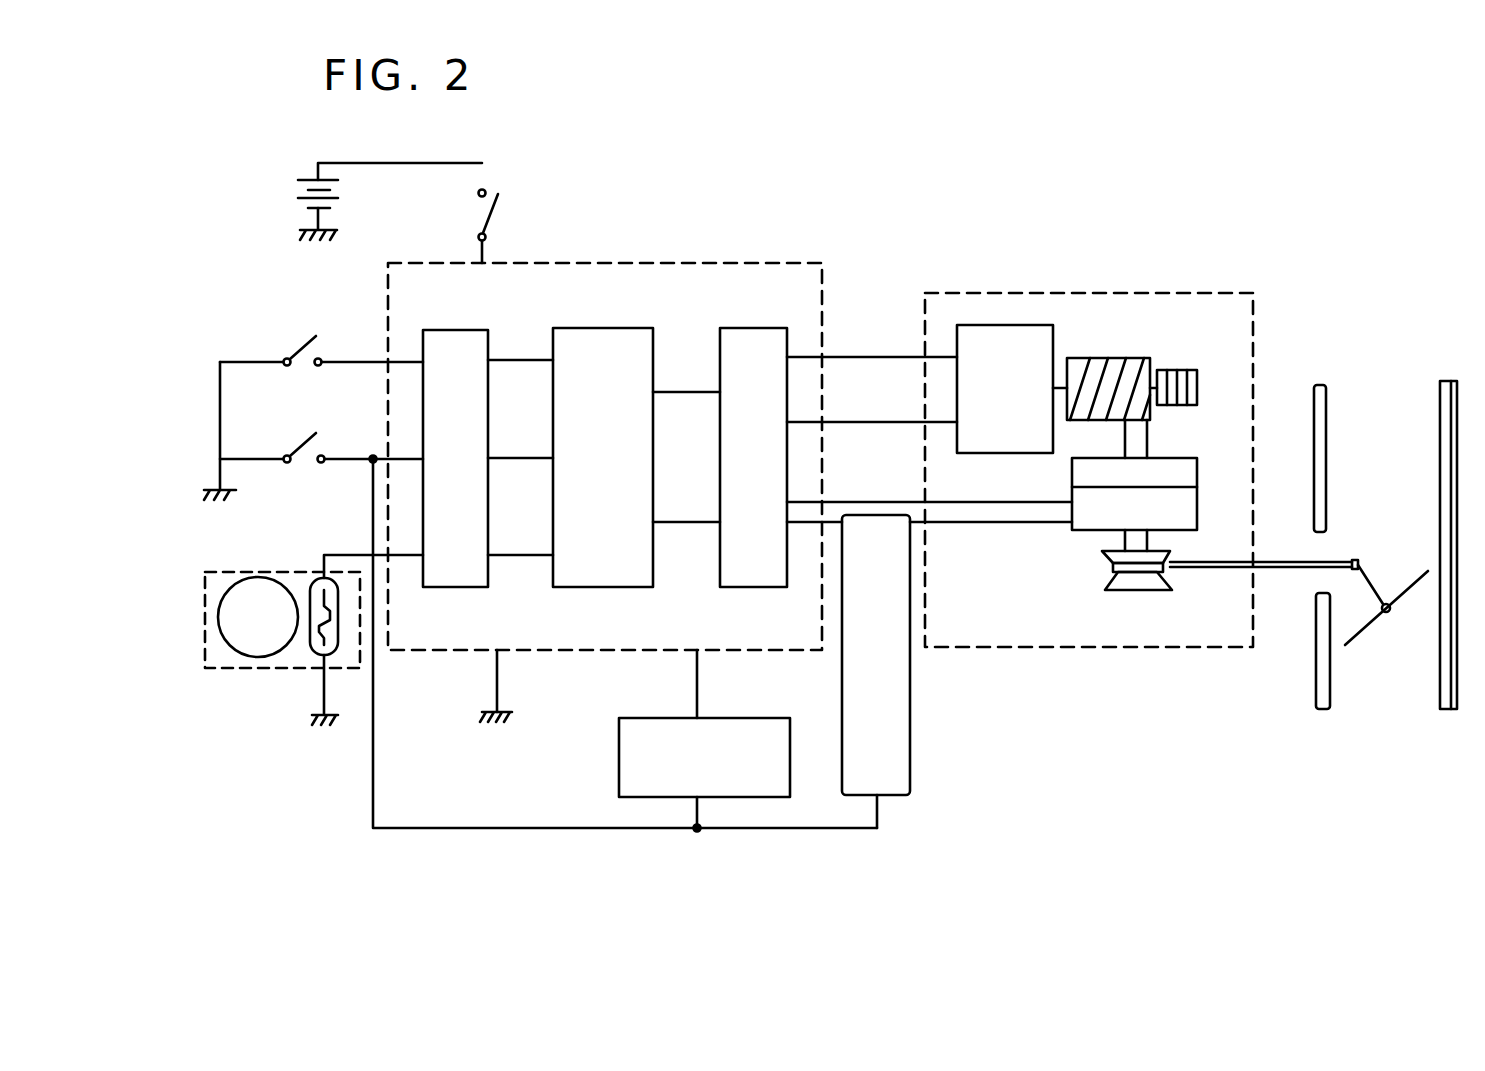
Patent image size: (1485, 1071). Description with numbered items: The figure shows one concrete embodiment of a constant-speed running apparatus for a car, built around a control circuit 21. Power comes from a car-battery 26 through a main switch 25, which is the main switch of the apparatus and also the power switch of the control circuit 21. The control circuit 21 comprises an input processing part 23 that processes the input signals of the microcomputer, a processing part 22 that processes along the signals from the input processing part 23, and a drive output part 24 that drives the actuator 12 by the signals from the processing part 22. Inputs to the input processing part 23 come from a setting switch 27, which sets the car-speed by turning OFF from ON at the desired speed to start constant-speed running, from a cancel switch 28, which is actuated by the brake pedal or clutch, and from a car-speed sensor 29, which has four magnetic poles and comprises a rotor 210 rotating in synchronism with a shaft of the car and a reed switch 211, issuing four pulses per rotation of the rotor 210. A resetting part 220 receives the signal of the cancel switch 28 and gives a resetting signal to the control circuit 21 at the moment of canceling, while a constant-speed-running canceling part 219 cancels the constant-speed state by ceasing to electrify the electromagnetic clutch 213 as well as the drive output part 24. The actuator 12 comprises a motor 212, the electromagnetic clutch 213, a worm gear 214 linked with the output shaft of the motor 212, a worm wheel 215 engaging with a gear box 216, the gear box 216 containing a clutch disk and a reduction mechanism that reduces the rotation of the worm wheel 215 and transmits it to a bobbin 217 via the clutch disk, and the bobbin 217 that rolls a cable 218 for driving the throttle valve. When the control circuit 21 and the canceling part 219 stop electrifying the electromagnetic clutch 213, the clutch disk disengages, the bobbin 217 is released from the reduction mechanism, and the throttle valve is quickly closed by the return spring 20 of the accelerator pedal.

The actuator 12 is at (960, 650).
The return spring 20 is at (1387, 612).
The control circuit 21 is at (670, 263).
The processing part 22 is at (623, 587).
The input processing part 23 is at (477, 587).
The drive output part 24 is at (773, 587).
The main switch 25 is at (508, 212).
The car-battery 26 is at (292, 195).
The setting switch 27 is at (270, 350).
The cancel switch 28 is at (280, 455).
The car-speed sensor 29 is at (215, 668).
The rotor 210 is at (283, 657).
The reed switch 211 is at (338, 645).
The motor 212 is at (1005, 325).
The electromagnetic clutch 213 is at (1197, 503).
The worm gear 214 is at (1120, 358).
The worm wheel 215 is at (1195, 368).
The gear box 216 is at (1197, 456).
The bobbin 217 is at (1175, 605).
The cable 218 is at (1295, 568).
The constant-speed-running canceling part 219 is at (910, 775).
The resetting part 220 is at (742, 797).